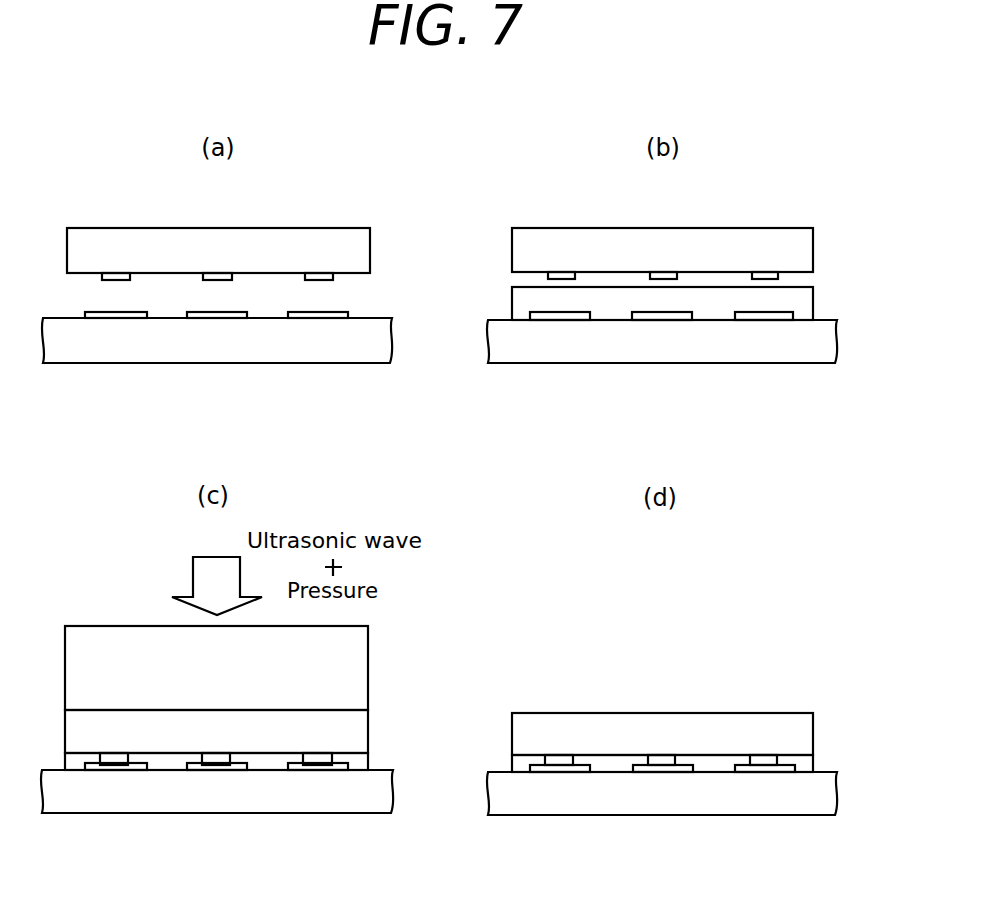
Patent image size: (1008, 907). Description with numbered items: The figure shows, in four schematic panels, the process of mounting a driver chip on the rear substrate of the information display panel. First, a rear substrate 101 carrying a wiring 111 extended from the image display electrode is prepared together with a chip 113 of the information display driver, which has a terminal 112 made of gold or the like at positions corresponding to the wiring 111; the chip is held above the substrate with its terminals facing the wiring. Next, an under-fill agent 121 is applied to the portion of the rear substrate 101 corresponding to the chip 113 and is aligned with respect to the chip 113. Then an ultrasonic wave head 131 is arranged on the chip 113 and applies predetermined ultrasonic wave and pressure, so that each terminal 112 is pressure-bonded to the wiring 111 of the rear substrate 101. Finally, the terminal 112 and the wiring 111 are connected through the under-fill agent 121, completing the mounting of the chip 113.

The rear substrate 101 is at (220, 343).
The wiring 111 is at (332, 312).
The terminal 112 is at (213, 283).
The chip 113 is at (257, 245).
The under-fill agent 121 is at (787, 302).
The ultrasonic wave head 131 is at (323, 662).